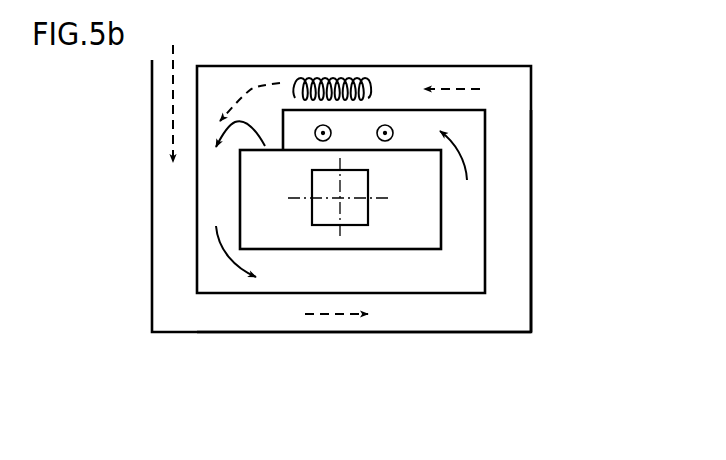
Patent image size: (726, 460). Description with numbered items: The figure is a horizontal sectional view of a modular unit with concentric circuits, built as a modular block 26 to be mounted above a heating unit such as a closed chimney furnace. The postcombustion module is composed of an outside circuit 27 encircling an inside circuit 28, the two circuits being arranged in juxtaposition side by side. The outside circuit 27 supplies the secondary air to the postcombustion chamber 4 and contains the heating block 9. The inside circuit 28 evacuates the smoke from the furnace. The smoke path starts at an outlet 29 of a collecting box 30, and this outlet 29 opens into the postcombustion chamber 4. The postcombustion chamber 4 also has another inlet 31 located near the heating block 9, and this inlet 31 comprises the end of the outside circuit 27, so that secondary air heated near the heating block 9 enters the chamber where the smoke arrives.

The postcombustion chamber 4 is at (248, 112).
The heating block 9 is at (361, 80).
The modular block 26 is at (540, 187).
The outside circuit 27 is at (508, 290).
The inside circuit 28 is at (300, 278).
The outlet 29 is at (260, 153).
The collecting box 30 is at (425, 6).
The inlet 31 is at (280, 97).